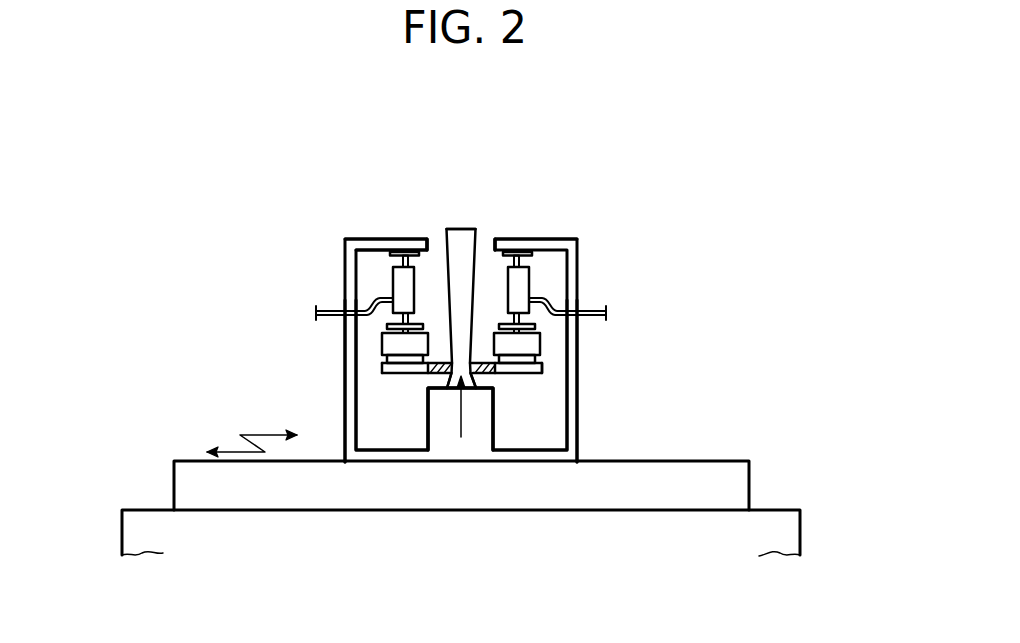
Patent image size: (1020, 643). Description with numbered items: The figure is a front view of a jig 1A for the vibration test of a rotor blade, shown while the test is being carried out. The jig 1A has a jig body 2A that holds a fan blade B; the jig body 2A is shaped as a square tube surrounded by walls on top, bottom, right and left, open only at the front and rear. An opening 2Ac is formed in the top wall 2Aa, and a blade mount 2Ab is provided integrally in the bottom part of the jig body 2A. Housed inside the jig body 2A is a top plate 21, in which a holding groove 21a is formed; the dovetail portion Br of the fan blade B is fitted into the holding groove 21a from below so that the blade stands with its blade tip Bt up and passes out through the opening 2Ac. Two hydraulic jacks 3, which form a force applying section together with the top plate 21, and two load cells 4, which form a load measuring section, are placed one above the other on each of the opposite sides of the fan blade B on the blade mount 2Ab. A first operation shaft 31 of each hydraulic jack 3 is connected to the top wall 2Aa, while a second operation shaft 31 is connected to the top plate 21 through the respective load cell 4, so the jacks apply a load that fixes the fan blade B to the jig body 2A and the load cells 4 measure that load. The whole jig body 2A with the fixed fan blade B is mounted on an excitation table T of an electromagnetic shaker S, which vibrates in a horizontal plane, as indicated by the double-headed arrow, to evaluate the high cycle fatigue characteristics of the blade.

The jig 1A is at (642, 172).
The jig body 2A is at (342, 250).
The top wall 2Aa is at (371, 245).
The blade mount 2Ab is at (438, 420).
The opening 2Ac is at (432, 245).
The hydraulic jack 3 is at (393, 286).
The operation shaft 31 is at (392, 256).
The load cell 4 is at (383, 342).
The top plate 21 is at (382, 368).
The holding groove 21a is at (428, 386).
The fan blade B is at (478, 265).
The blade tip Bt is at (461, 235).
The dovetail portion Br is at (477, 381).
The electromagnetic shaker S is at (471, 548).
The excitation table T is at (621, 493).